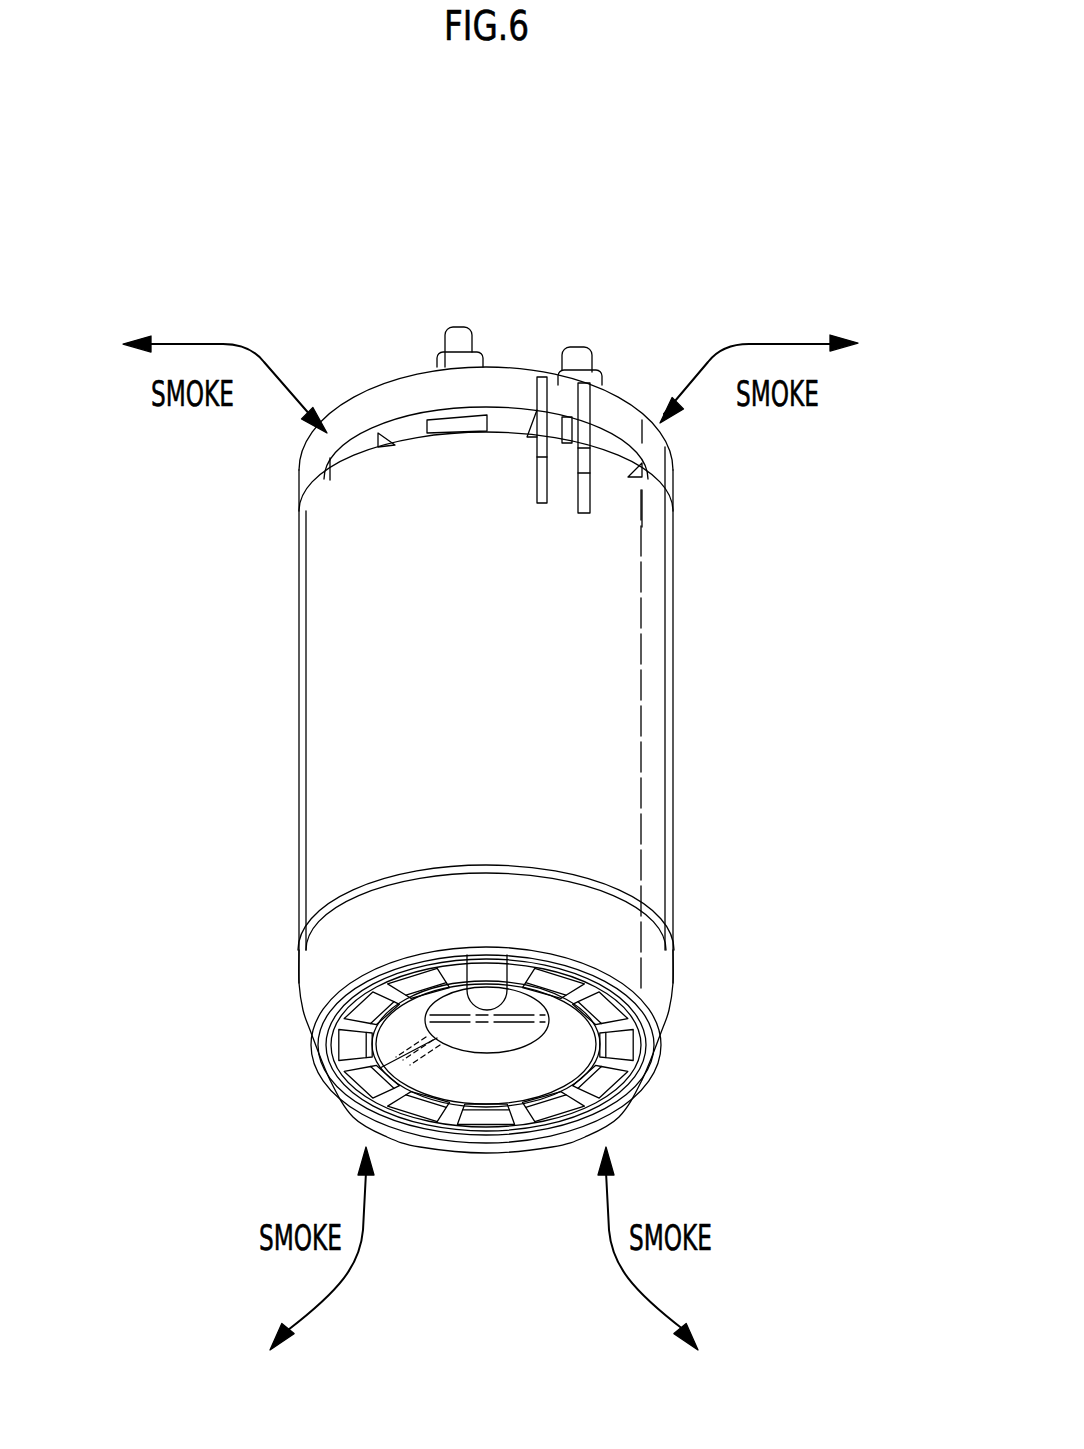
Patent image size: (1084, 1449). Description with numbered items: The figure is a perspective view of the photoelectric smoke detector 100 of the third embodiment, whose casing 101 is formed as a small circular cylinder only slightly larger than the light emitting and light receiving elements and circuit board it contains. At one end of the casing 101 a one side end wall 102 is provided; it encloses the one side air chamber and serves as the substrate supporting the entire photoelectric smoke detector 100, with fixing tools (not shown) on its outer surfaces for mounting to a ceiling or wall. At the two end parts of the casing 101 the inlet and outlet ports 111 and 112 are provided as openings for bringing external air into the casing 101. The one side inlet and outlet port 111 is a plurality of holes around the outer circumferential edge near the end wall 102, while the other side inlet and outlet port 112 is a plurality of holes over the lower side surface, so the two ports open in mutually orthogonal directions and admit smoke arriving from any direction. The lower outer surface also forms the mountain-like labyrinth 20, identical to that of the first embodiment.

The photoelectric smoke detector 100 is at (808, 232).
The casing 101 is at (355, 697).
The one side end wall 102 is at (497, 382).
The one side inlet and outlet port 111 is at (397, 437).
The other side inlet and outlet port 112 is at (370, 1077).
The mountain-like labyrinth 20 is at (482, 1030).